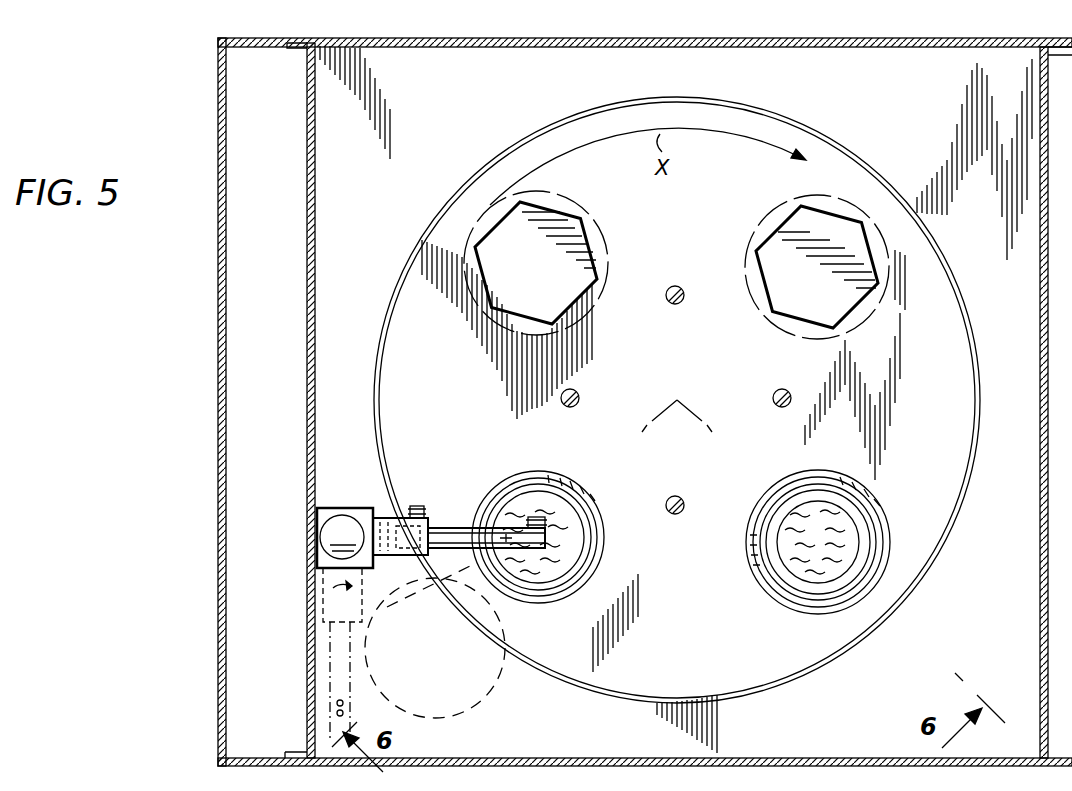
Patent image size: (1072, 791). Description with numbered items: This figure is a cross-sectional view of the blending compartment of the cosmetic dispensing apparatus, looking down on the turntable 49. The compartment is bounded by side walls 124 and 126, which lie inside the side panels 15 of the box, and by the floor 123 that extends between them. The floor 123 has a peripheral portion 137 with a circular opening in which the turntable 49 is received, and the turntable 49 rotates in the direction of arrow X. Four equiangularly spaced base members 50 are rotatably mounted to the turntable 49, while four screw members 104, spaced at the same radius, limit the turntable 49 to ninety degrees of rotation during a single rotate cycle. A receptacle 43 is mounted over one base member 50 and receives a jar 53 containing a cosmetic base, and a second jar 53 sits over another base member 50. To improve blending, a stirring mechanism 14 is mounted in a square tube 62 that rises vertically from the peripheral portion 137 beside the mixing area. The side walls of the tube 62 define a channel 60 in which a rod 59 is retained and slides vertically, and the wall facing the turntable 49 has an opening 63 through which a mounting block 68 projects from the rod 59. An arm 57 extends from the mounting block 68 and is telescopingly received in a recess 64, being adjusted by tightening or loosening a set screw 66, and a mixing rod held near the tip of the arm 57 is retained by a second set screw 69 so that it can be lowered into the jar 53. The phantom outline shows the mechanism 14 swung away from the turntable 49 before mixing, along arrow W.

The stirring mechanism 14 is at (412, 572).
The side panels 15 is at (218, 441).
The receptacle 43 is at (598, 513).
The turntable 49 is at (404, 267).
The base members 50 is at (584, 220).
The jar 53 is at (560, 582).
The arm 57 is at (456, 530).
The rod 59 is at (343, 522).
The channel 60 is at (318, 512).
The square tube 62 is at (368, 508).
The opening 63 is at (735, 766).
The recess 64 is at (444, 550).
The set screw 66 is at (417, 506).
The mounting block 68 is at (393, 561).
The second set screw 69 is at (540, 521).
The screw members 104 is at (690, 283).
The floor 123 is at (437, 41).
The side wall 124 is at (309, 437).
The side wall 126 is at (1040, 298).
The peripheral portion 137 is at (941, 76).